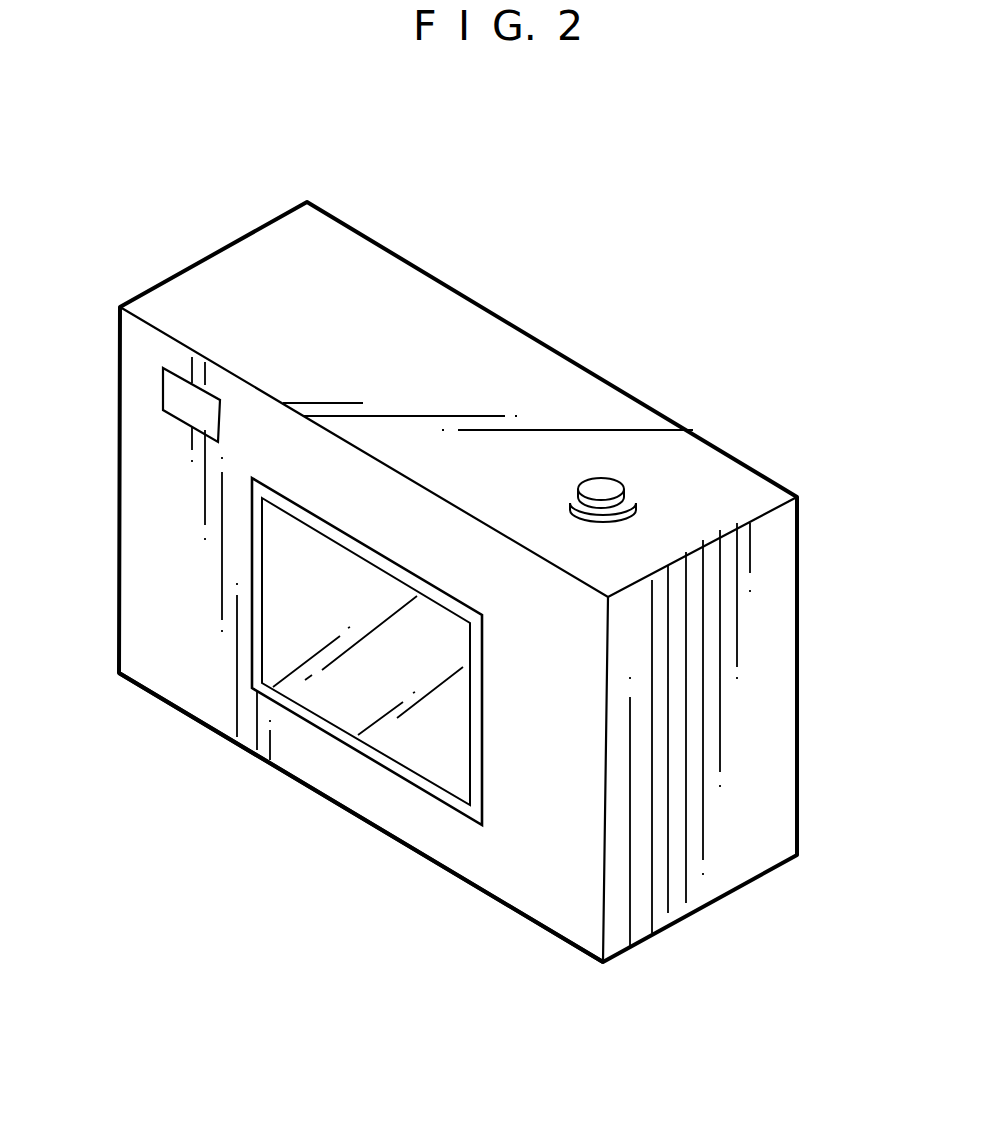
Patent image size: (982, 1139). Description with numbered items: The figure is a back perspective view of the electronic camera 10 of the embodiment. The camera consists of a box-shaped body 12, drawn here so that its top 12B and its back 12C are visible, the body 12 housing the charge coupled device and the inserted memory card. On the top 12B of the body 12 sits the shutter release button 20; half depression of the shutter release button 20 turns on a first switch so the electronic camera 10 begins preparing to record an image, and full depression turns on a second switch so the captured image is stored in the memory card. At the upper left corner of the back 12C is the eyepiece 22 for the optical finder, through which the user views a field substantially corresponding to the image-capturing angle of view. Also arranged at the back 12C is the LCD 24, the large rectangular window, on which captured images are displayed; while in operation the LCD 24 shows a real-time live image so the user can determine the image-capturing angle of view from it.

The electronic camera 10 is at (792, 260).
The body 12 is at (558, 373).
The top 12B is at (347, 265).
The back 12C is at (543, 907).
The shutter release button 20 is at (612, 492).
The eyepiece 22 is at (183, 393).
The LCD 24 is at (477, 792).